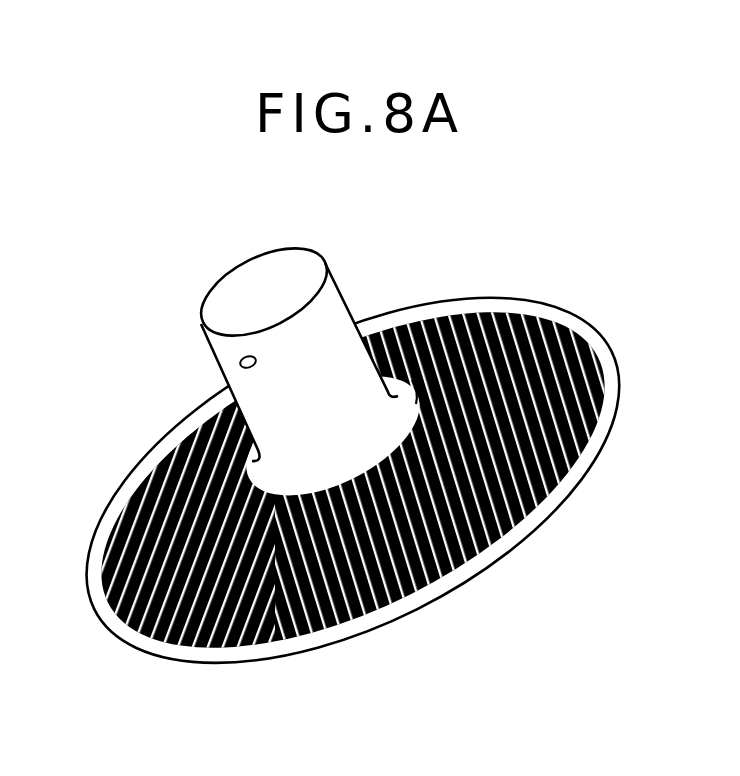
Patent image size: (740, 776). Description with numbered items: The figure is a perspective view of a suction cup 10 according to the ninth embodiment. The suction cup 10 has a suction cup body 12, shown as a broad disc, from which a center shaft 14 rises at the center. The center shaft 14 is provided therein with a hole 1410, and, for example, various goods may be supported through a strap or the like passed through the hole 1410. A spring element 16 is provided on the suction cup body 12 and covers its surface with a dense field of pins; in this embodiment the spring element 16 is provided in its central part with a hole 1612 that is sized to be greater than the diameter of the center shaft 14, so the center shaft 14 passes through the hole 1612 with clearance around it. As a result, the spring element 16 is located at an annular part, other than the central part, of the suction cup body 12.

The suction cup 10 is at (353, 453).
The suction cup body 12 is at (353, 480).
The center shaft 14 is at (248, 345).
The spring element 16 is at (570, 482).
The hole 1410 is at (240, 362).
The hole 1612 is at (453, 325).